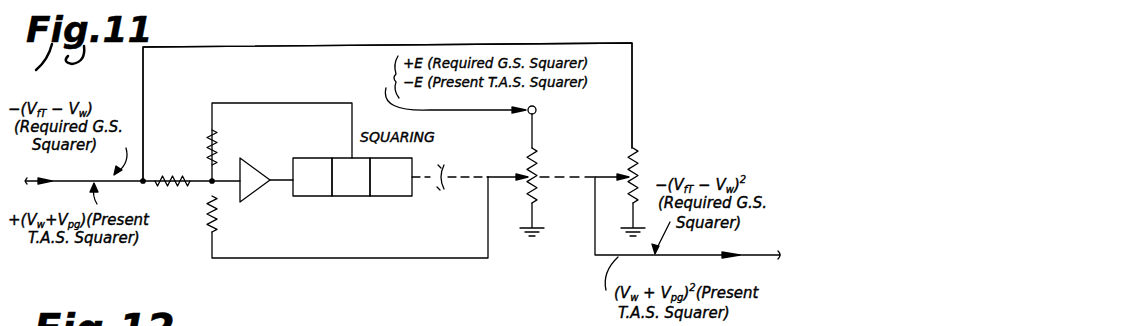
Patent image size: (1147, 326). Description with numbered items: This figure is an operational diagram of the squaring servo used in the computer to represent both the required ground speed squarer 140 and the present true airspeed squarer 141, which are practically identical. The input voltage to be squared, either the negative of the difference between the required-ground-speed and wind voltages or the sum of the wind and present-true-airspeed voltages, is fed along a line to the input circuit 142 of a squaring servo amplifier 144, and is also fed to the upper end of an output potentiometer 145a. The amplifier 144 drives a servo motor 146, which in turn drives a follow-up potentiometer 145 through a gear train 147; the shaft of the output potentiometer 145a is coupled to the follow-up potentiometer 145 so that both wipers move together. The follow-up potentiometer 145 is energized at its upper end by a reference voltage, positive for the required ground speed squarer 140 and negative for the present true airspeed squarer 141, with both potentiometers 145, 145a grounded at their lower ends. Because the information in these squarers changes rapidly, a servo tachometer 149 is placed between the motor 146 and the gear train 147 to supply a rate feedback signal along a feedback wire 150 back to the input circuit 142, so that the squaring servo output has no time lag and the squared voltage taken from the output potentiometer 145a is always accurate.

The required ground speed squarer 140 is at (270, 68).
The present true airspeed squarer 141 is at (387, 112).
The input circuit 142 is at (198, 172).
The squaring servo amplifier 144 is at (246, 166).
The follow-up potentiometer 145 is at (537, 160).
The output potentiometer 145a is at (638, 150).
The servo motor 146 is at (313, 197).
The gear train 147 is at (394, 197).
The servo tachometer 149 is at (358, 197).
The feedback wire 150 is at (283, 103).